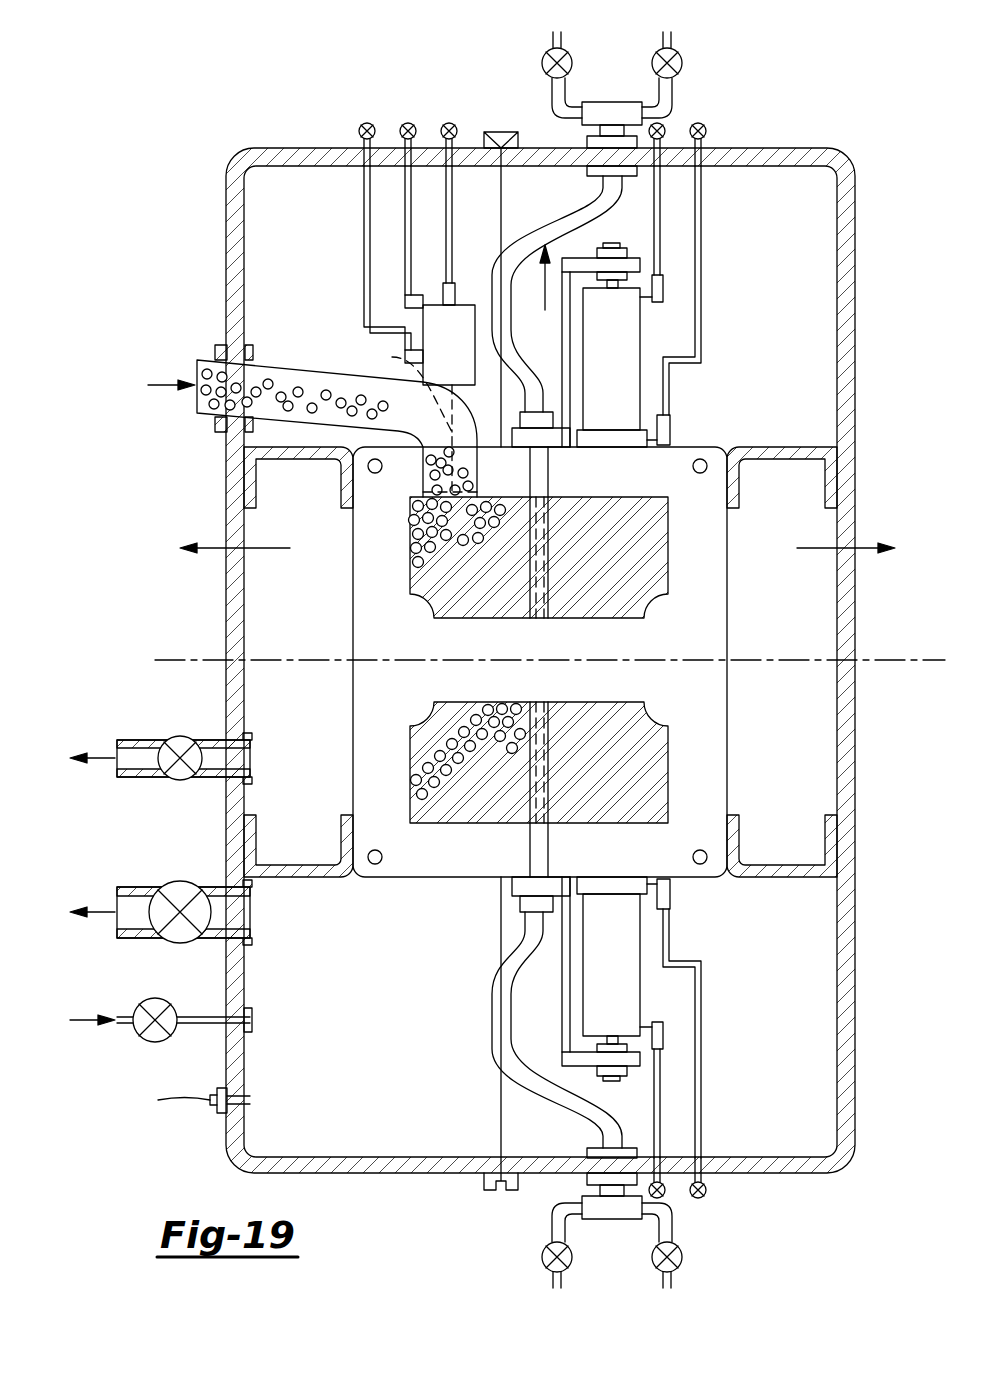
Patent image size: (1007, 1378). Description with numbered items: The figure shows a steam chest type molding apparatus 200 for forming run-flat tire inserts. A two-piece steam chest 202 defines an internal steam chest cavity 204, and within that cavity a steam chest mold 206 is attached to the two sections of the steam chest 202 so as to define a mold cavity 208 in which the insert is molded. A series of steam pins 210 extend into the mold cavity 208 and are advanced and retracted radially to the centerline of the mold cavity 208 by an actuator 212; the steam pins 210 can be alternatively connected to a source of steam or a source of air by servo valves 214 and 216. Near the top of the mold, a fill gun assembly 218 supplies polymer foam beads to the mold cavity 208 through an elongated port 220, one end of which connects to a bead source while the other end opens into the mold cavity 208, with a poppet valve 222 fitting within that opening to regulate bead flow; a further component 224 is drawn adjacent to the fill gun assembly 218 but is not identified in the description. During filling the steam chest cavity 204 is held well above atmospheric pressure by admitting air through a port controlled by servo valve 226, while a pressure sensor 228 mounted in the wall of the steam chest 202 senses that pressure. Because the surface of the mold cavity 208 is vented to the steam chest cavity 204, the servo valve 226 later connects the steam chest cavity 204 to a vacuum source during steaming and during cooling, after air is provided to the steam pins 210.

The steam chest type molding apparatus 200 is at (882, 220).
The two-piece steam chest 202 is at (857, 323).
The steam chest cavity 204 is at (643, 306).
The steam chest mold 206 is at (729, 625).
The mold cavity 208 is at (645, 550).
The steam pins 210 is at (552, 477).
The actuator 212 is at (642, 338).
The servo valve 214 is at (541, 63).
The servo valve 216 is at (683, 63).
The fill gun assembly 218 is at (337, 337).
The elongated port 220 is at (297, 425).
The poppet valve 222 is at (392, 357).
The gate actuator 224 is at (417, 330).
The servo valve 226 is at (178, 882).
The pressure sensor 228 is at (147, 1040).